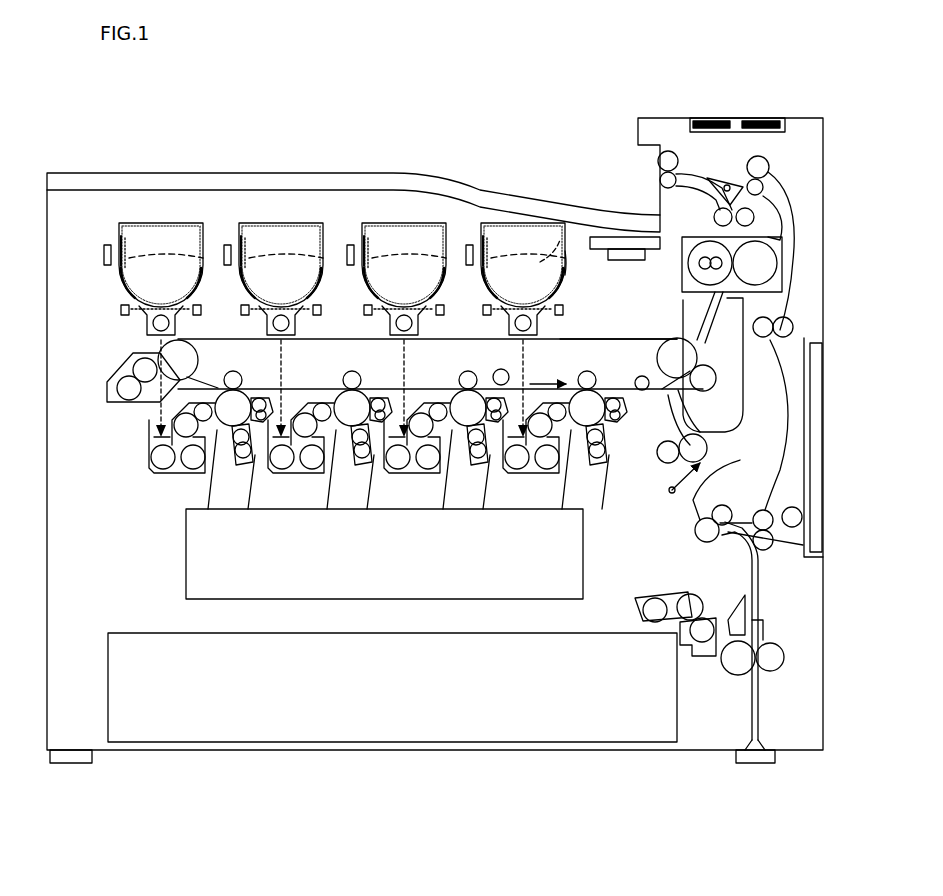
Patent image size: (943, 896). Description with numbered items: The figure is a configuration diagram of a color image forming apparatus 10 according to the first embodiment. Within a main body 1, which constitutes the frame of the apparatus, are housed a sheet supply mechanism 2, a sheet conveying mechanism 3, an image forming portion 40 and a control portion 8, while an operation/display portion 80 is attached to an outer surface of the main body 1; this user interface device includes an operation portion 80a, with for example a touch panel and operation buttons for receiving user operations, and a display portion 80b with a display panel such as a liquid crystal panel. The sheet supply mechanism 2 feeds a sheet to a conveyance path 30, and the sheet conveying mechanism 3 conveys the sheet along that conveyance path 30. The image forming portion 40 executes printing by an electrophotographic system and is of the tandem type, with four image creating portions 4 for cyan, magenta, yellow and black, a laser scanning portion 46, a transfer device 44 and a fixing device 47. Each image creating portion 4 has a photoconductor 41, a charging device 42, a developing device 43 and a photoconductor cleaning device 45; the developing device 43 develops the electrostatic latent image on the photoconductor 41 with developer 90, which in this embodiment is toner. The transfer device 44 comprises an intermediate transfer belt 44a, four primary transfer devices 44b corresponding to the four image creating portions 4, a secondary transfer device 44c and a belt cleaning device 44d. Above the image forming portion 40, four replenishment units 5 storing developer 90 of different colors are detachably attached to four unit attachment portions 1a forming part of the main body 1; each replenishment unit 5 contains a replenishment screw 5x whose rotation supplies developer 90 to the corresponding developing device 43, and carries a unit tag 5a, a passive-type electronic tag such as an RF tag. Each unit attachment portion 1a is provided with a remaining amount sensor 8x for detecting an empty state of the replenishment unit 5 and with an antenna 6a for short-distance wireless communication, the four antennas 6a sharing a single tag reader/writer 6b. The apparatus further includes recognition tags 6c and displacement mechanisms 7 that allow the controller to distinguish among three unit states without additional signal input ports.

The main body 1 is at (47, 410).
The unit attachment portion 1a is at (560, 296).
The sheet supply mechanism 2 is at (695, 668).
The sheet conveying mechanism 3 is at (782, 627).
The image creating portion 4 is at (222, 378).
The replenishment unit 5 is at (183, 220).
The unit tag 5a is at (121, 242).
The replenishment screw 5x is at (152, 322).
The antenna 6a is at (104, 255).
The tag reader/writer 6b is at (627, 261).
The recognition tag 6c is at (124, 268).
The displacement mechanism 7 is at (127, 285).
The control portion 8 is at (616, 237).
The remaining amount sensor 8x is at (118, 314).
The image forming apparatus 10 is at (100, 128).
The conveyance path 30 is at (708, 542).
The image forming portion 40 is at (92, 373).
The photoconductor 41 is at (250, 466).
The charging device 42 is at (240, 470).
The developing device 43 is at (175, 474).
The transfer device 44 is at (708, 356).
The intermediate transfer belt 44a is at (652, 322).
The primary transfer device 44b is at (235, 371).
The secondary transfer device 44c is at (718, 381).
The belt cleaning device 44d is at (120, 403).
The photoconductor cleaning device 45 is at (270, 378).
The laser scanning portion 46 is at (584, 560).
The fixing device 47 is at (785, 249).
The operation/display portion 80 is at (790, 125).
The operation portion 80a is at (718, 118).
The display portion 80b is at (770, 118).
The developer 90 is at (560, 260).